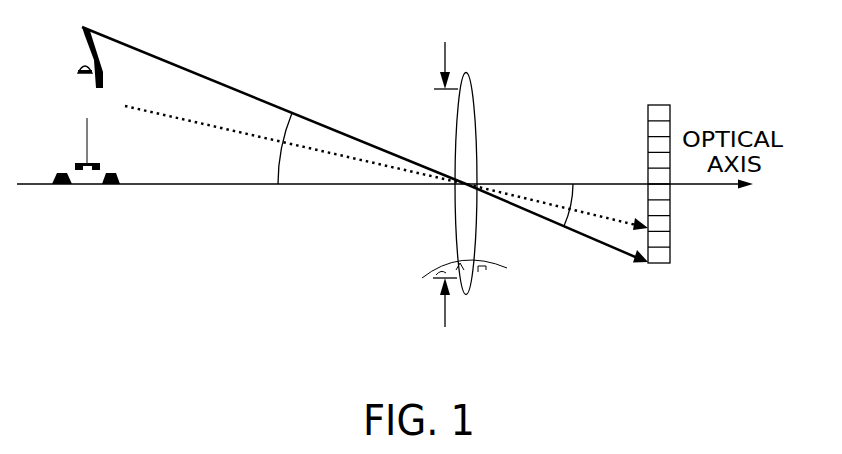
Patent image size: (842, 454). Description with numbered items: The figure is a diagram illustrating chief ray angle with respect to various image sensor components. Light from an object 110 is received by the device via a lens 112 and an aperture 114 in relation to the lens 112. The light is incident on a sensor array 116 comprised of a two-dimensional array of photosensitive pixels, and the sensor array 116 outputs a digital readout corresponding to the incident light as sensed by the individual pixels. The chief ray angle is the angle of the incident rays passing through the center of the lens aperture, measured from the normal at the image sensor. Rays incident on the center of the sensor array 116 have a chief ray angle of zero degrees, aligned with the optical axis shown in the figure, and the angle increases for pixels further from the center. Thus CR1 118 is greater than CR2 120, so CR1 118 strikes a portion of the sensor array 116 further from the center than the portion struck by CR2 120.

The object 110 is at (62, 188).
The lens 112 is at (465, 103).
The aperture 114 is at (443, 57).
The sensor array 116 is at (658, 263).
The CR1 118 is at (155, 54).
The CR2 120 is at (134, 108).